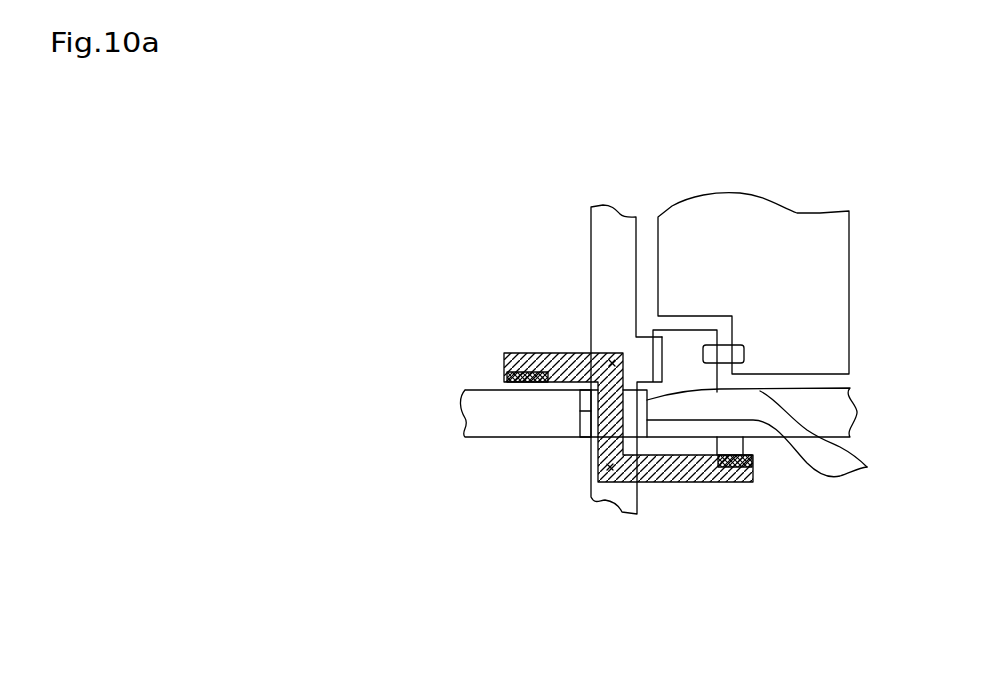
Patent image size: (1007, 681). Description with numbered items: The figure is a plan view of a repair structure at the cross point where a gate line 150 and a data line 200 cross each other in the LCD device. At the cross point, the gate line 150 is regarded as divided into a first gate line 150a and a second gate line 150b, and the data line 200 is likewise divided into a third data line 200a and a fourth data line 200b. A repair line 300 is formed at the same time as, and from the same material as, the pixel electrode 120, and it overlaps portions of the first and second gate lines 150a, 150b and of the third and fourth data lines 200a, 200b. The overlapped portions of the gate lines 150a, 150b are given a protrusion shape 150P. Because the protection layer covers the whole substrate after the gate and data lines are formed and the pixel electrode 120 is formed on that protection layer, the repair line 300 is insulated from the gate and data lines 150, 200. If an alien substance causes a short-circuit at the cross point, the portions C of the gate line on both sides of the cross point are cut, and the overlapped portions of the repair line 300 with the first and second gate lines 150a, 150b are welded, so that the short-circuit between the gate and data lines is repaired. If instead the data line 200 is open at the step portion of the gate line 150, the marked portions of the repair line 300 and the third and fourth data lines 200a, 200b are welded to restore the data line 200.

The pixel electrode 120 is at (827, 230).
The data line 200 is at (496, 359).
The third data line 200a is at (593, 303).
The fourth data line 200b is at (591, 497).
The gate line 150 is at (658, 530).
The first gate line 150a is at (675, 427).
The second gate line 150b is at (546, 432).
The protrusion shape 150P is at (507, 374).
The repair line 300 is at (723, 482).
The portions C is at (769, 437).